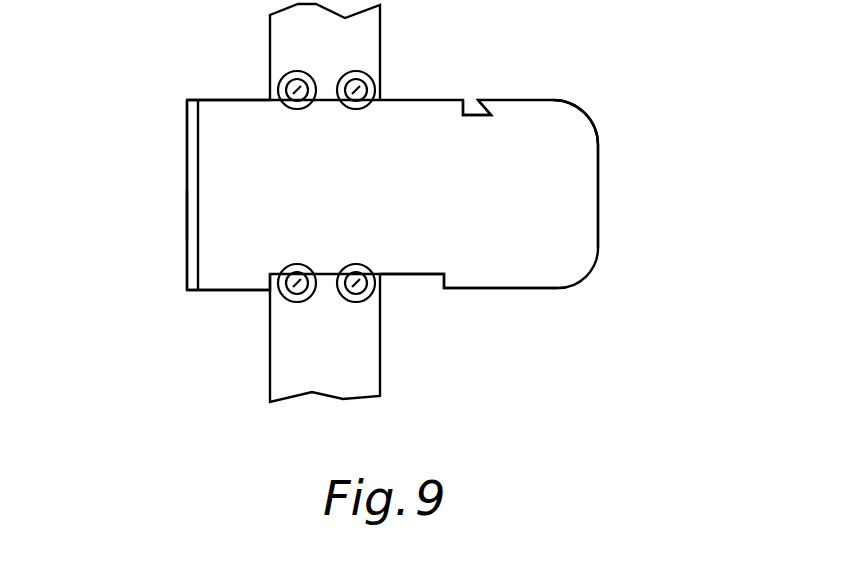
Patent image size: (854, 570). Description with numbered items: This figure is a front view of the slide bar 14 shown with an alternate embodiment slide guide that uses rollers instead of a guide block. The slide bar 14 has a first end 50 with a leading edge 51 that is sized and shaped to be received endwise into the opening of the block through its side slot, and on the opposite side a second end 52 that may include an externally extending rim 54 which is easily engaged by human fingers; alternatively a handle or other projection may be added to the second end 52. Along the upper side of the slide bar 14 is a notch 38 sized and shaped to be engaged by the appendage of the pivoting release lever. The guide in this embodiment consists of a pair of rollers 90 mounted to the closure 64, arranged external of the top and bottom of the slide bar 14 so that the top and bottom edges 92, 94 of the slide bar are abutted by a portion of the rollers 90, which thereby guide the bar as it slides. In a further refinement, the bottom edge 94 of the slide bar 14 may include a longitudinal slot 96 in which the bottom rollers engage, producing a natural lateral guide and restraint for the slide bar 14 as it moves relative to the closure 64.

The slide bar 14 is at (573, 128).
The notch 38 is at (474, 118).
The first end 50 is at (640, 250).
The leading edge 51 is at (600, 197).
The second end 52 is at (158, 217).
The externally extending rim 54 is at (186, 132).
The closure 64 is at (370, 33).
The rollers 90 is at (304, 93).
The top edge 92 is at (233, 100).
The bottom edge 94 is at (230, 292).
The longitudinal slot 96 is at (425, 276).